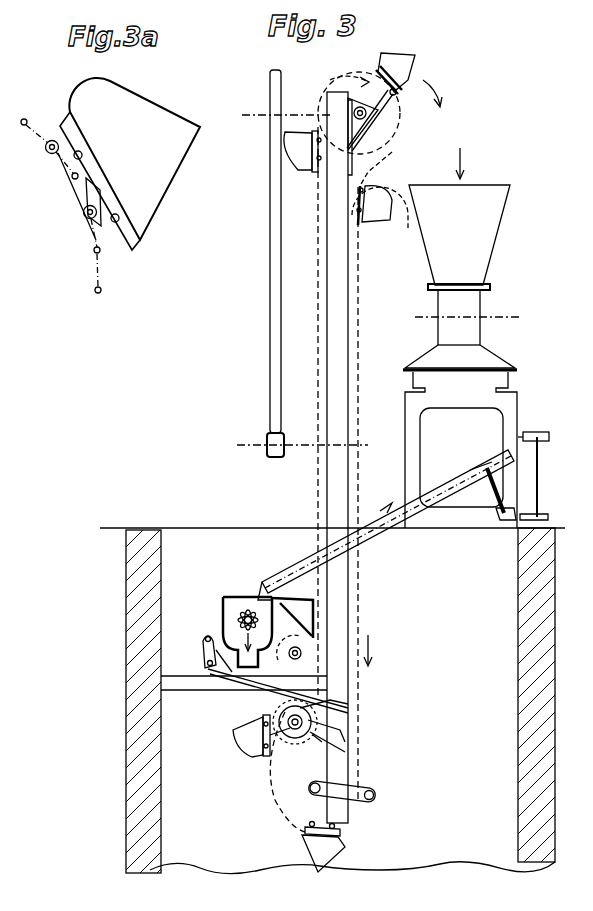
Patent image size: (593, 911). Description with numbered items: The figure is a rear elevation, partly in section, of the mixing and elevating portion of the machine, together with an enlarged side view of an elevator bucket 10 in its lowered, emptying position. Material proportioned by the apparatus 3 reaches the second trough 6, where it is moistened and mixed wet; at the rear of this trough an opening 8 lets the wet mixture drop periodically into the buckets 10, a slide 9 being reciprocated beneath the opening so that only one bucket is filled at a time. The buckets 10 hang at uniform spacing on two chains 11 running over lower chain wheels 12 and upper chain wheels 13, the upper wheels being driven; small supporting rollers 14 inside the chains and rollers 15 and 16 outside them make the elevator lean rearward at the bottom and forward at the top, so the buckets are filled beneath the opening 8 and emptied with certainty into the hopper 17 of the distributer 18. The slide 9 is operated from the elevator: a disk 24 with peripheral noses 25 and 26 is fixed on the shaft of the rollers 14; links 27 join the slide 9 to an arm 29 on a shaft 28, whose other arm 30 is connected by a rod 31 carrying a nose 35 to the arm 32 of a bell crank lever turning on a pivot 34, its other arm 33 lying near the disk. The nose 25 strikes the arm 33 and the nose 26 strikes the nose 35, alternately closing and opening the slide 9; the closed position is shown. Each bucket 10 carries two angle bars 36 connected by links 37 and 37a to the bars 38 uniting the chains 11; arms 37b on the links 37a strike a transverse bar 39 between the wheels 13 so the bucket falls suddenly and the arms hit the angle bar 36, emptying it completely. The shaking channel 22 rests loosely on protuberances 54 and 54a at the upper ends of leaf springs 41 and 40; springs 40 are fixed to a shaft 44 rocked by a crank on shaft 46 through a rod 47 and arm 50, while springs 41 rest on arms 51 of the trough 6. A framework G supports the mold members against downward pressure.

In FIG. 3A, the proportioning apparatus 3 is at (134, 159).
In FIG. 3, the second trough (wet mixer) 6 is at (223, 600).
In FIG. 3, the opening 8 is at (258, 648).
In FIG. 3, the slide 9 is at (258, 665).
In FIG. 3, the bucket 10 is at (290, 646).
In FIG. 3A, the chain 11 is at (12, 114).
In FIG. 3, the chain 11 is at (378, 163).
In FIG. 3, the lower chain wheel 12 is at (280, 806).
In FIG. 3, the upper chain wheel 13 is at (359, 113).
In FIG. 3, the supporting roller 14 is at (301, 740).
In FIG. 3, the supporting roller 15 is at (300, 651).
In FIG. 3, the supporting roller 16 is at (394, 222).
In FIG. 3, the hopper 17 is at (459, 237).
In FIG. 3, the distributer 18 is at (462, 329).
In FIG. 3, the shaking channel 22 is at (380, 538).
In FIG. 3, the disk 24 is at (272, 745).
In FIG. 3, the nose 25 is at (290, 742).
In FIG. 3, the nose 26 is at (350, 712).
In FIG. 3, the link 27 is at (228, 656).
In FIG. 3, the shaft 28 is at (208, 636).
In FIG. 3, the arm 29 is at (204, 656).
In FIG. 3, the arm 30 is at (206, 666).
In FIG. 3, the rod 31 is at (258, 688).
In FIG. 3, the arm of bell crank lever 32 is at (345, 732).
In FIG. 3, the arm of bell crank lever 33 is at (321, 747).
In FIG. 3, the pivot 34 is at (348, 750).
In FIG. 3, the nose 35 is at (322, 706).
In FIG. 3A, the angle bar 36 is at (68, 128).
In FIG. 3A, the link 37 is at (70, 165).
In FIG. 3A, the link 37a is at (93, 233).
In FIG. 3A, the arm 37b is at (88, 194).
In FIG. 3, the arm 37b is at (370, 119).
In FIG. 3A, the bar 38 is at (45, 152).
In FIG. 3, the transverse bar 39 is at (397, 96).
In FIG. 3, the leaf spring 40 is at (495, 492).
In FIG. 3, the leaf spring 41 is at (293, 612).
In FIG. 3, the shaft 44 is at (502, 522).
In FIG. 3, the shaft 46 is at (525, 436).
In FIG. 3, the rod 47 is at (539, 479).
In FIG. 3, the arm 50 is at (525, 513).
In FIG. 3, the arm 51 is at (295, 618).
In FIG. 3, the protuberance 54 is at (290, 586).
In FIG. 3, the upper end of spring 54a is at (484, 478).
In FIG. 3, the framework G is at (406, 418).